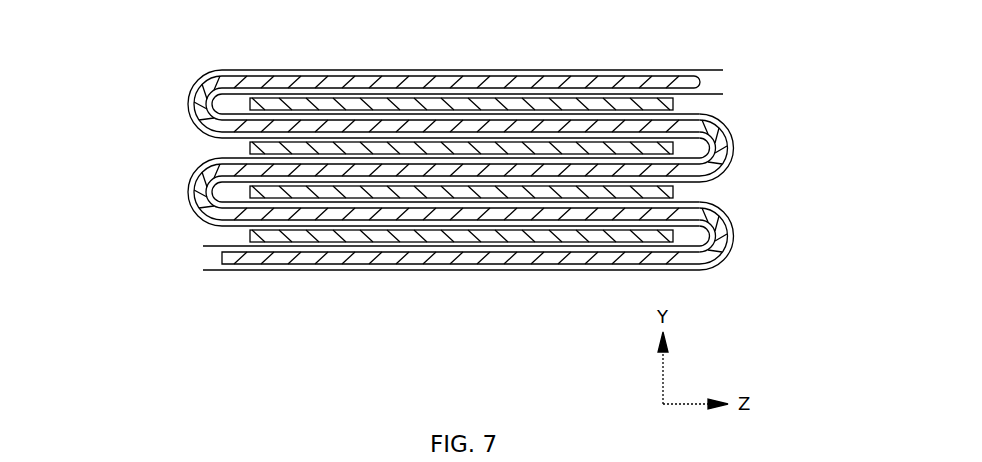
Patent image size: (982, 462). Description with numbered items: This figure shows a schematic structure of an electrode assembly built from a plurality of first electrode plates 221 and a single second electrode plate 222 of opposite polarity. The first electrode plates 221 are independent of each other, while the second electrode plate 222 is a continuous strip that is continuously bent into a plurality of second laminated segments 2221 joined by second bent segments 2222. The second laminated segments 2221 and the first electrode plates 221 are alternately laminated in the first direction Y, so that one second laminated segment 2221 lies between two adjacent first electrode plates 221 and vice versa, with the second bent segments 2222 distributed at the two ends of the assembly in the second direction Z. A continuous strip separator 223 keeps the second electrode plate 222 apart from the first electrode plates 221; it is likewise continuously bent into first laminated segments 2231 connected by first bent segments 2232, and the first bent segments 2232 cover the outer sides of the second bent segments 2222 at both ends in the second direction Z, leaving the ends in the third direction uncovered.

The first electrode plate 221 is at (502, 110).
The second electrode plate 222 is at (95, 32).
The second laminated segment 2221 is at (250, 86).
The second bent segment 2222 is at (207, 107).
The separator 223 is at (828, 87).
The first laminated segment 2231 is at (731, 148).
The first bent segment 2232 is at (693, 114).